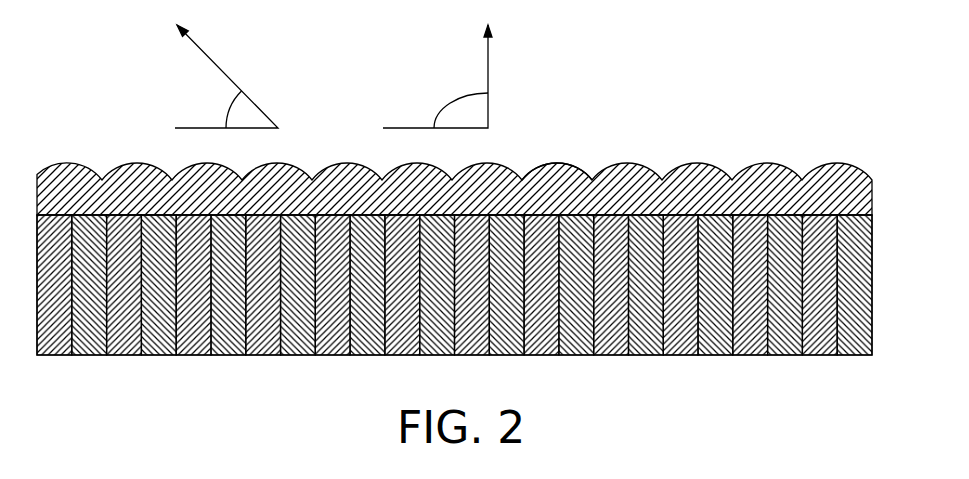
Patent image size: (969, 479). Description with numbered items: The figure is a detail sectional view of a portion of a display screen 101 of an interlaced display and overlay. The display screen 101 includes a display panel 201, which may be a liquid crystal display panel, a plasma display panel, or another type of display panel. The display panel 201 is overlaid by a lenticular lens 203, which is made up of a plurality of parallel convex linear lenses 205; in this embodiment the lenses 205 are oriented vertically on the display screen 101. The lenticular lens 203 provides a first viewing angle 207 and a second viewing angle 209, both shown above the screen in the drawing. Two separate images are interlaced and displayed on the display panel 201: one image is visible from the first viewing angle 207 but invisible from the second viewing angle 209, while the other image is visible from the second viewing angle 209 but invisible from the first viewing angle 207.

The display screen 101 is at (470, 187).
The display panel 201 is at (873, 238).
The lenticular lens 203 is at (454, 148).
The convex linear lenses 205 is at (557, 162).
The first viewing angle 207 is at (452, 100).
The second viewing angle 209 is at (227, 110).